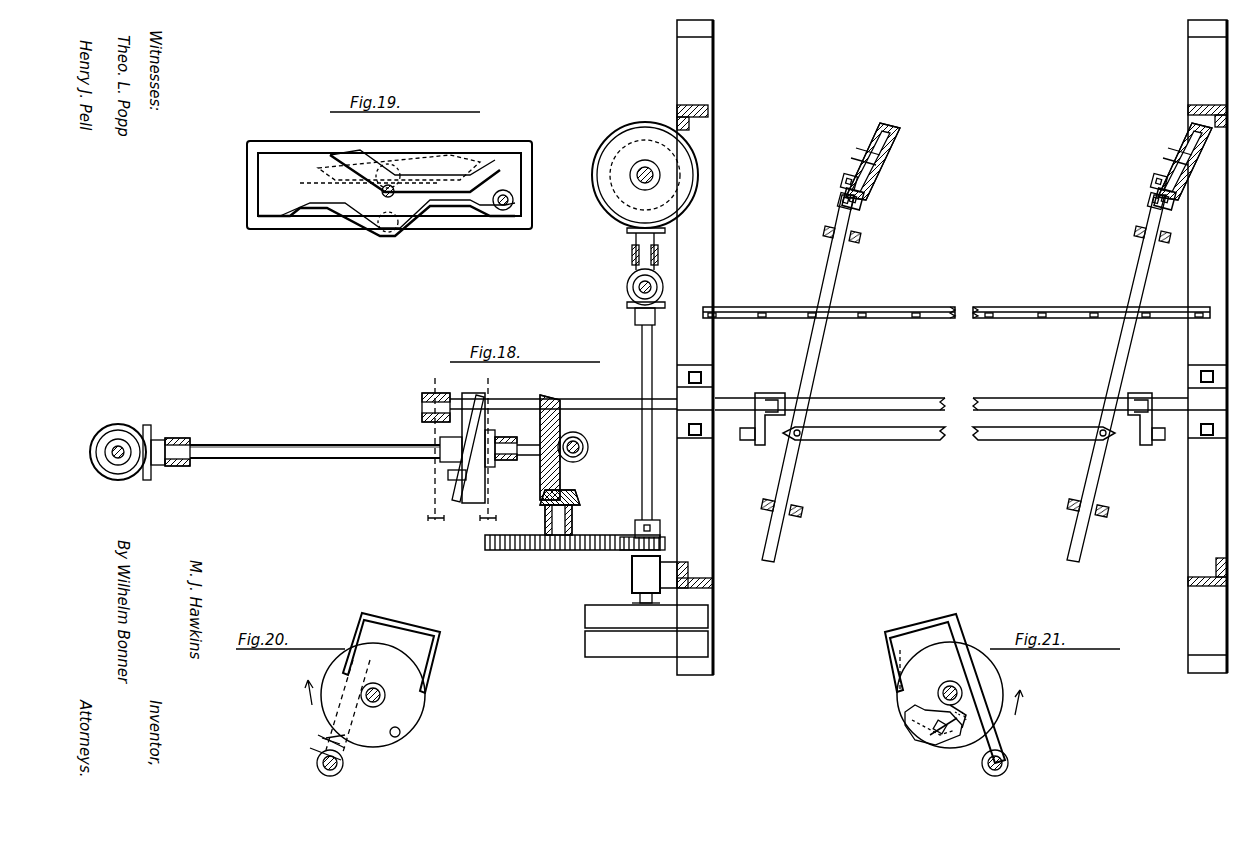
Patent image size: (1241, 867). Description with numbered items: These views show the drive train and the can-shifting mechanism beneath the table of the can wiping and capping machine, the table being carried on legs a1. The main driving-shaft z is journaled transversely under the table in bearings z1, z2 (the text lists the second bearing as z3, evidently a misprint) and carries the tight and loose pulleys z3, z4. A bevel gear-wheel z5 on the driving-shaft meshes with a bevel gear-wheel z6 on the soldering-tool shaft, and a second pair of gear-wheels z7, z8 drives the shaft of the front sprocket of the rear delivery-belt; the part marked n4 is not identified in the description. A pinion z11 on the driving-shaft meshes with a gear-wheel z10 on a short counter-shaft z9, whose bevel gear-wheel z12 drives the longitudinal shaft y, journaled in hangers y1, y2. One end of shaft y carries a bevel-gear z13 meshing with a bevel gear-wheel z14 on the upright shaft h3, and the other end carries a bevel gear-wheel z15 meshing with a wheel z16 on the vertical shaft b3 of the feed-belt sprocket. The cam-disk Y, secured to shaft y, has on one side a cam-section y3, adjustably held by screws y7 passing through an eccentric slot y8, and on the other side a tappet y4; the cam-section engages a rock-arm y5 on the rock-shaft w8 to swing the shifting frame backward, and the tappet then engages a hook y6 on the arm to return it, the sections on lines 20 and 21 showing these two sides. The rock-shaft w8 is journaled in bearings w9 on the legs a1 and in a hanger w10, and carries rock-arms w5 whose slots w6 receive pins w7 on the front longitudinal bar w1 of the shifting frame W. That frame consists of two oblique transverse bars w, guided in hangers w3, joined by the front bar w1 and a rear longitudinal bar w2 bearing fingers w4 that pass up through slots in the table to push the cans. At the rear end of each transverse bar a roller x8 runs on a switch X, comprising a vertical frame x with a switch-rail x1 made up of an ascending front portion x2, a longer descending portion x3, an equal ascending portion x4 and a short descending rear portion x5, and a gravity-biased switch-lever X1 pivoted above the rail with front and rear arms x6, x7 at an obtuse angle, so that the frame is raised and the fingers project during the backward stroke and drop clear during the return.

In FIG. 19, the switch X is at (305, 137).
In FIG. 18, the switch X is at (885, 165).
In FIG. 19, the vertical frame x is at (492, 152).
In FIG. 18, the vertical frame x is at (897, 133).
In FIG. 19, the switch-rail x1 is at (388, 232).
In FIG. 18, the switch-rail x1 is at (878, 132).
In FIG. 19, the ascending front portion x2 is at (503, 212).
In FIG. 19, the descending portion x3 is at (440, 222).
In FIG. 19, the ascending portion x4 is at (345, 218).
In FIG. 19, the descending rear portion x5 is at (292, 216).
In FIG. 19, the front arm x6 is at (460, 185).
In FIG. 19, the rear arm x7 is at (330, 168).
In FIG. 19, the supporting roller x8 is at (512, 198).
In FIG. 18, the supporting roller x8 is at (870, 207).
In FIG. 18, the switch-lever X1 is at (866, 162).
In FIG. 18, the supporting-leg a1 is at (714, 57).
In FIG. 18, the main driving-shaft z is at (650, 383).
In FIG. 18, the bearing z1 is at (646, 579).
In FIG. 18, the bearing z2 is at (631, 251).
In FIG. 18, the tight pulley z3 is at (646, 616).
In FIG. 18, the loose pulley z4 is at (646, 644).
In FIG. 18, the bevel gear-wheel z5 is at (667, 304).
In FIG. 18, the bevel gear-wheel z6 is at (660, 280).
In FIG. 18, the gear-wheel z7 is at (667, 231).
In FIG. 18, the gear-wheel z8 is at (645, 175).
In FIG. 18, the counter-shaft z9 is at (573, 517).
In FIG. 18, the gear-wheel z10 is at (545, 551).
In FIG. 18, the pinion z11 is at (666, 542).
In FIG. 18, the bevel gear-wheel z12 is at (547, 400).
In FIG. 18, the bevel-gear z13 is at (568, 437).
In FIG. 18, the bevel gear-wheel z14 is at (580, 440).
In FIG. 18, the bevel gear-wheel z15 is at (148, 425).
In FIG. 18, the bevel gear-wheel z16 is at (100, 435).
In FIG. 18, the shaft n4 is at (638, 289).
In FIG. 18, the upright shaft h3 is at (588, 448).
In FIG. 18, the vertical shaft b3 is at (122, 446).
In FIG. 18, the longitudinal shaft y is at (298, 445).
In FIG. 20, the longitudinal shaft y is at (361, 695).
In FIG. 21, the longitudinal shaft y is at (938, 690).
In FIG. 18, the hanger y1 is at (178, 438).
In FIG. 18, the hanger y2 is at (508, 437).
In FIG. 18, the cam-section y3 is at (495, 462).
In FIG. 21, the cam-section y3 is at (915, 742).
In FIG. 18, the tappet y4 is at (448, 476).
In FIG. 20, the tappet y4 is at (405, 735).
In FIG. 18, the rock-arm y5 is at (462, 440).
In FIG. 20, the rock-arm y5 is at (358, 637).
In FIG. 21, the rock-arm y5 is at (975, 670).
In FIG. 18, the hook y6 is at (455, 497).
In FIG. 20, the hook y6 is at (428, 668).
In FIG. 21, the hook y6 is at (895, 668).
In FIG. 18, the screws y7 is at (493, 445).
In FIG. 21, the screws y7 is at (943, 725).
In FIG. 21, the eccentric slot y8 is at (955, 735).
In FIG. 18, the cam-disk Y is at (467, 490).
In FIG. 20, the cam-disk Y is at (395, 661).
In FIG. 21, the cam-disk Y is at (948, 656).
In FIG. 18, the section line 20 is at (445, 448).
In FIG. 18, the section line 21 is at (497, 447).
In FIG. 18, the shifting frame W is at (870, 330).
In FIG. 18, the transverse bar w is at (826, 275).
In FIG. 18, the front longitudinal bar w1 is at (930, 441).
In FIG. 21, the front longitudinal bar w1 is at (1010, 763).
In FIG. 18, the rear longitudinal bar w2 is at (938, 308).
In FIG. 18, the hanger w3 is at (822, 235).
In FIG. 18, the finger w4 is at (868, 308).
In FIG. 18, the rock-arm w5 is at (758, 420).
In FIG. 18, the slot w6 is at (1169, 420).
In FIG. 18, the pin w7 is at (745, 441).
In FIG. 18, the rock-shaft w8 is at (1038, 398).
In FIG. 20, the rock-shaft w8 is at (317, 763).
In FIG. 18, the bearing w9 is at (832, 407).
In FIG. 18, the hanger w10 is at (425, 395).